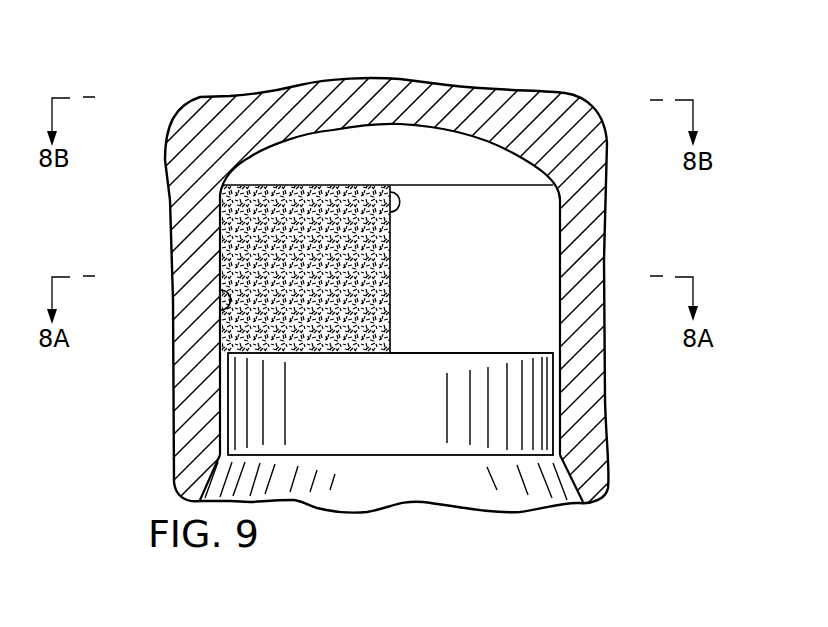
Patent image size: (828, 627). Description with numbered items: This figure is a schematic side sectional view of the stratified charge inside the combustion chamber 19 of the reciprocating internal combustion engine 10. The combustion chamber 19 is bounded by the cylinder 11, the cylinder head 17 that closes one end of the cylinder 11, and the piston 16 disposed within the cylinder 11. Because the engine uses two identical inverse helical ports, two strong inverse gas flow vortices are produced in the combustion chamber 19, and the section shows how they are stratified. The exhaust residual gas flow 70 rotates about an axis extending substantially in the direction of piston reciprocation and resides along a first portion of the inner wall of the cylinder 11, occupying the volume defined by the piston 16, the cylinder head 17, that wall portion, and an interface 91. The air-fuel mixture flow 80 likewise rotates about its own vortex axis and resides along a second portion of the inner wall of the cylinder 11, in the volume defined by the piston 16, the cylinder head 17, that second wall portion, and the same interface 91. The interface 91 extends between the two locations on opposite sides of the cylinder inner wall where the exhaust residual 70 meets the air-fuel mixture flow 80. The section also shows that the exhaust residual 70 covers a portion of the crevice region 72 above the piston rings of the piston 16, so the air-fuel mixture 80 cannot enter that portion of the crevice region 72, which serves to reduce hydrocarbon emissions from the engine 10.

The internal combustion engine 10 is at (629, 79).
The cylinder head 17 is at (249, 93).
The combustion chamber 19 is at (443, 150).
The interface 91 is at (395, 190).
The exhaust residual gas flow 70 is at (232, 260).
The air-fuel mixture flow 80 is at (543, 233).
The cylinder 11 is at (222, 303).
The crevice region 72 is at (225, 366).
The piston 16 is at (325, 445).